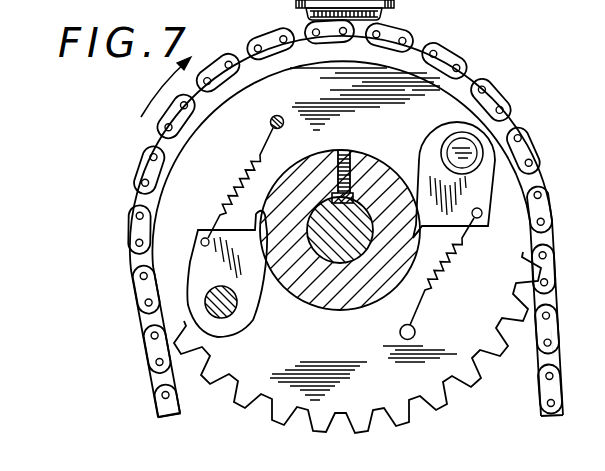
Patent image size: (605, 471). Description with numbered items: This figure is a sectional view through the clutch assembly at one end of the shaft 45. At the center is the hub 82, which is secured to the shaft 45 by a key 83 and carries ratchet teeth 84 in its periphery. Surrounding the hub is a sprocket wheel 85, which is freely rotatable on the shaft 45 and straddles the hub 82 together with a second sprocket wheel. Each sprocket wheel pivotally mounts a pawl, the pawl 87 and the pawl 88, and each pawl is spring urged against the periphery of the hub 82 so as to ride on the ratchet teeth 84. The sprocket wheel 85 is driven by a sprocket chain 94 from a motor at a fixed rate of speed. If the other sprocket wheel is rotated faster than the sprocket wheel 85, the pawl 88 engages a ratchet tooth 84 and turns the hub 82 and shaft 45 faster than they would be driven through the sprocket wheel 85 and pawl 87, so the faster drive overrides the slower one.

The shaft 45 is at (300, 299).
The hub 82 is at (347, 311).
The key 83 is at (389, 149).
The ratchet teeth 84 is at (341, 228).
The sprocket wheel 85 is at (443, 97).
The pawl 87 is at (483, 181).
The pawl 88 is at (197, 270).
The chain link 94 is at (553, 343).